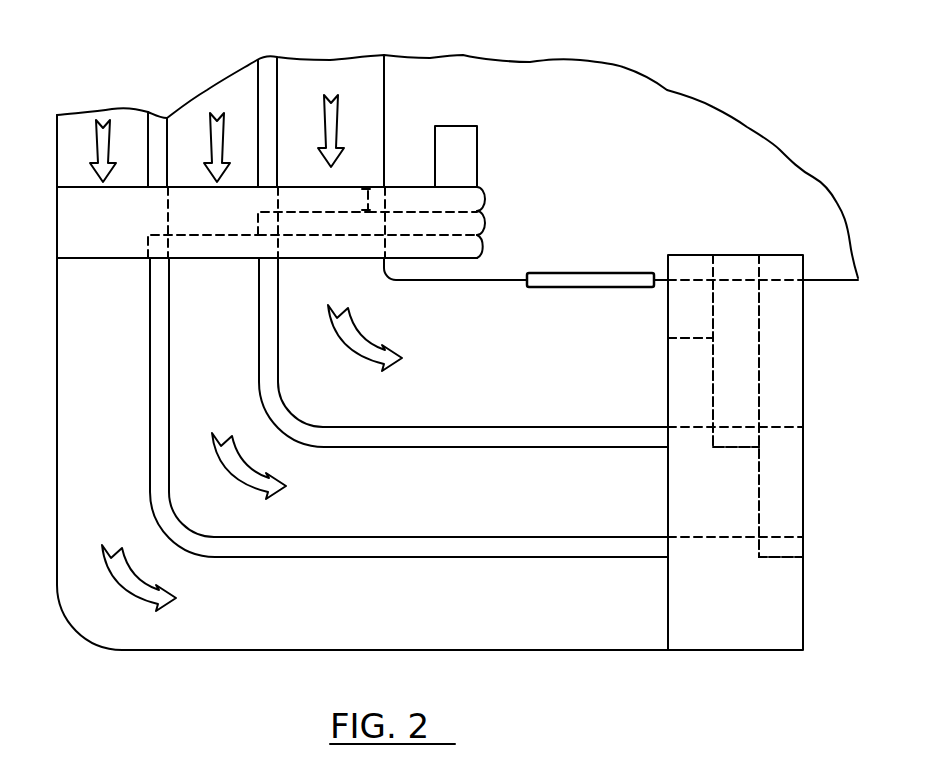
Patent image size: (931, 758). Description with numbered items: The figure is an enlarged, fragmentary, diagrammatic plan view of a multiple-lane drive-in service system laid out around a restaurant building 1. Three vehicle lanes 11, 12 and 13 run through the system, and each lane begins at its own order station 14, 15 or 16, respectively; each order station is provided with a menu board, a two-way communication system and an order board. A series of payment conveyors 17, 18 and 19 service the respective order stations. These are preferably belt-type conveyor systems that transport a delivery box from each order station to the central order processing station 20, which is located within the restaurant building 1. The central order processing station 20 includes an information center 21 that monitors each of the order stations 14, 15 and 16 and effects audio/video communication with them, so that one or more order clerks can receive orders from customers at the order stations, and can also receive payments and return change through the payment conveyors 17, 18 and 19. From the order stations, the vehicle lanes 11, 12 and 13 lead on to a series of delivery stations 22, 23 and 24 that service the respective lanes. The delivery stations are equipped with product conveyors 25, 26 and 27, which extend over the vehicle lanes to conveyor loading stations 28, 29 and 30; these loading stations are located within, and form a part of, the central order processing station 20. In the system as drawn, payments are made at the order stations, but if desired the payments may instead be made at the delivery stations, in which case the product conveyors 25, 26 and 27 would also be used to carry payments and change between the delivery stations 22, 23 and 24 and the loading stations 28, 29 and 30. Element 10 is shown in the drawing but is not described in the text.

The restaurant building 1 is at (446, 67).
The heater 10 is at (598, 272).
The vehicle lane 11 is at (363, 68).
The vehicle lane 12 is at (247, 82).
The vehicle lane 13 is at (140, 115).
The order station 14 is at (363, 195).
The order station 15 is at (255, 220).
The order station 16 is at (145, 248).
The payment conveyor 17 is at (438, 200).
The payment conveyor 18 is at (447, 223).
The payment conveyor 19 is at (453, 247).
The central order processing station 20 is at (595, 174).
The information center 21 is at (465, 135).
The delivery station 22 is at (690, 342).
The delivery station 23 is at (742, 450).
The delivery station 24 is at (782, 560).
The product conveyor 25 is at (697, 315).
The product conveyor 26 is at (737, 352).
The product conveyor 27 is at (772, 413).
The conveyor loading station 28 is at (695, 255).
The conveyor loading station 29 is at (742, 255).
The conveyor loading station 30 is at (785, 255).